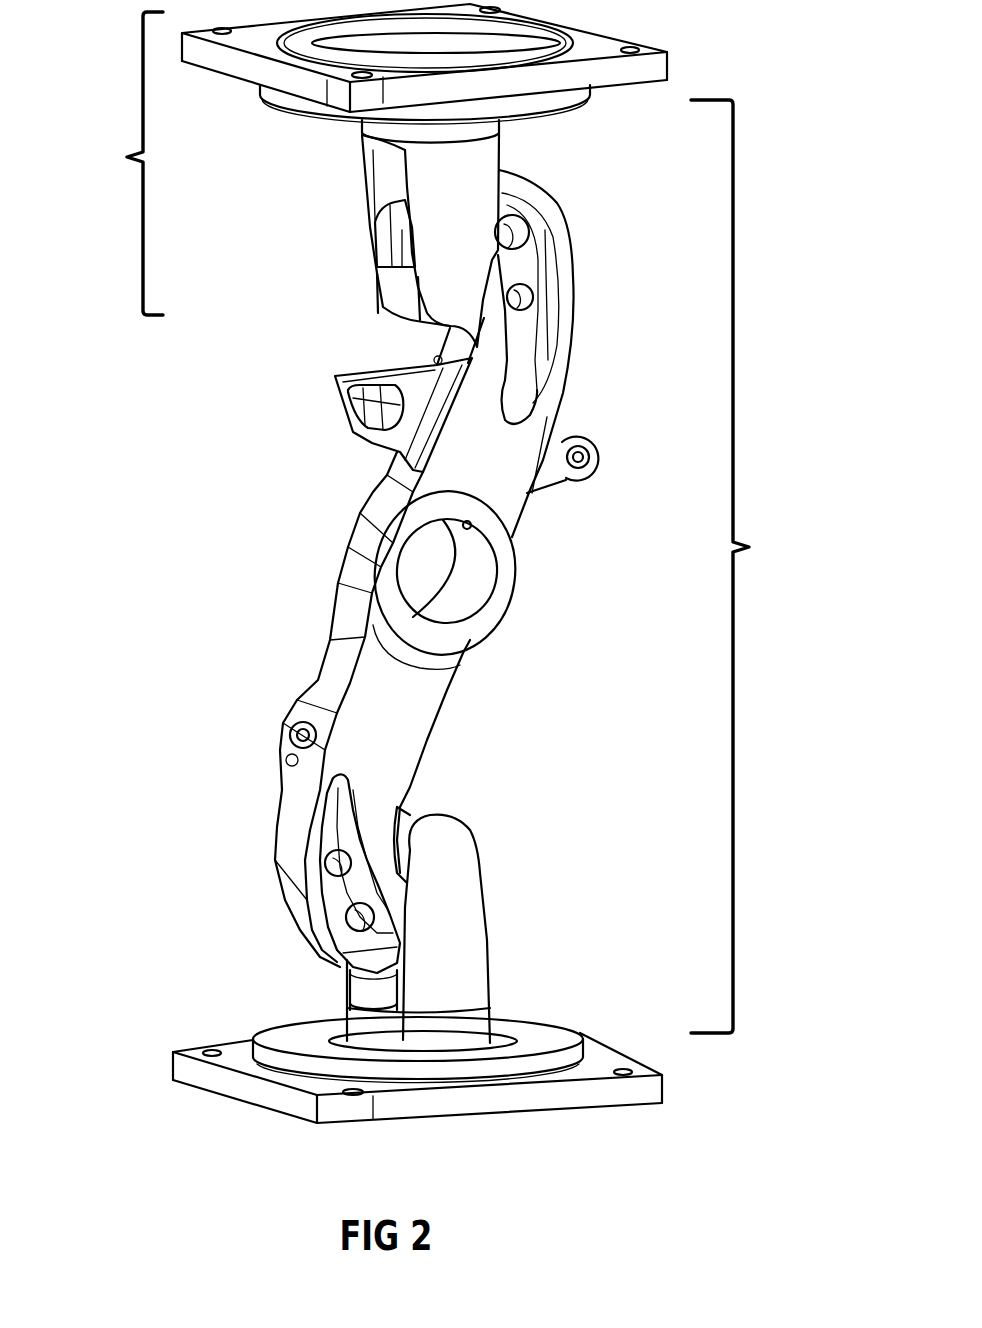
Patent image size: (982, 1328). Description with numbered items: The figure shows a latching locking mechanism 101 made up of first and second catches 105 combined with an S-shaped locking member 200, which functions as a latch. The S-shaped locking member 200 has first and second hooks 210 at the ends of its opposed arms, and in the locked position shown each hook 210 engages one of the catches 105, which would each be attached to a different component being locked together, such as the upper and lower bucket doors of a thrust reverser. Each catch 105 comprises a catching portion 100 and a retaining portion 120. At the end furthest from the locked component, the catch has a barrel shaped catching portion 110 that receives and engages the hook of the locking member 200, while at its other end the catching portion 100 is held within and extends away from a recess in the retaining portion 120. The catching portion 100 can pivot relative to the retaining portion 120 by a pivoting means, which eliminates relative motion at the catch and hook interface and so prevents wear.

The catching portion 100 is at (480, 163).
The latching locking mechanism 101 is at (754, 566).
The catch 105 is at (116, 163).
The barrel shaped catching portion 110 is at (400, 295).
The retaining portion 120 is at (658, 72).
The S-shaped locking member 200 is at (557, 415).
The hook 210 is at (398, 253).